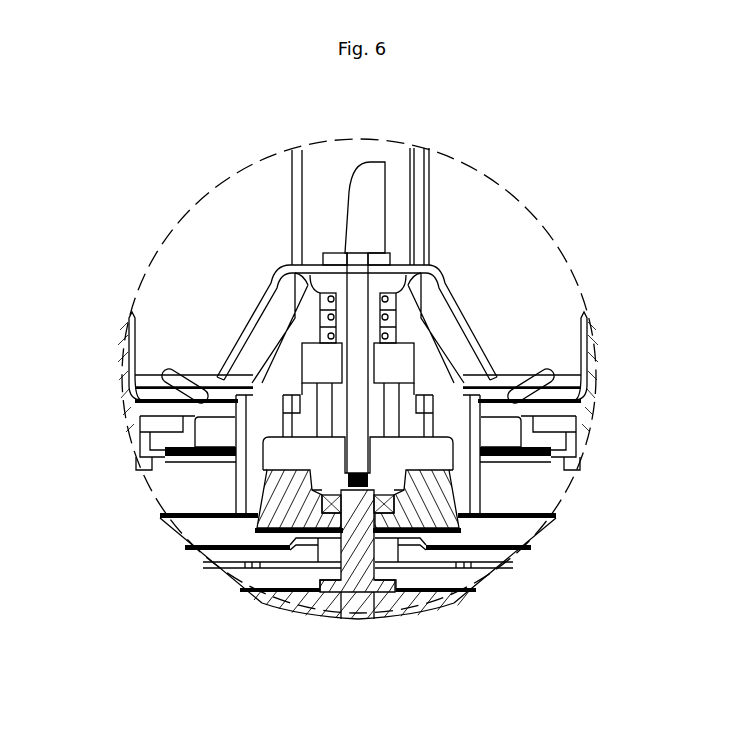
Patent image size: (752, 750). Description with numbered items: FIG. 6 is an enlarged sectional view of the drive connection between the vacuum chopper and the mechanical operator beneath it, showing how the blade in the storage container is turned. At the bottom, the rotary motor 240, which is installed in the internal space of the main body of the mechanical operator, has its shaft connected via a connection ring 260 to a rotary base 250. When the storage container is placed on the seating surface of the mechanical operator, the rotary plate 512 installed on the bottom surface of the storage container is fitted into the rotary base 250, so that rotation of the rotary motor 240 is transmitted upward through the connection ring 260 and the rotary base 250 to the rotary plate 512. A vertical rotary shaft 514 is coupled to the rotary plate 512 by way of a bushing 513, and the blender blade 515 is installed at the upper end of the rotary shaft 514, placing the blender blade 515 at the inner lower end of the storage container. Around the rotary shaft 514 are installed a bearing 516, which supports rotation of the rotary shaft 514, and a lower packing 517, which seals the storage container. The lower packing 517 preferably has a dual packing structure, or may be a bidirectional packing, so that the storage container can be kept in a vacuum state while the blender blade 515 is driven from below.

The blender blade 515 is at (452, 277).
The lower packing 517 is at (396, 330).
The bearing 516 is at (396, 362).
The rotary shaft 514 is at (340, 362).
The bushing 513 is at (292, 404).
The rotary plate 512 is at (396, 460).
The connection ring 260 is at (512, 550).
The rotary base 250 is at (262, 521).
The rotary motor 240 is at (360, 600).